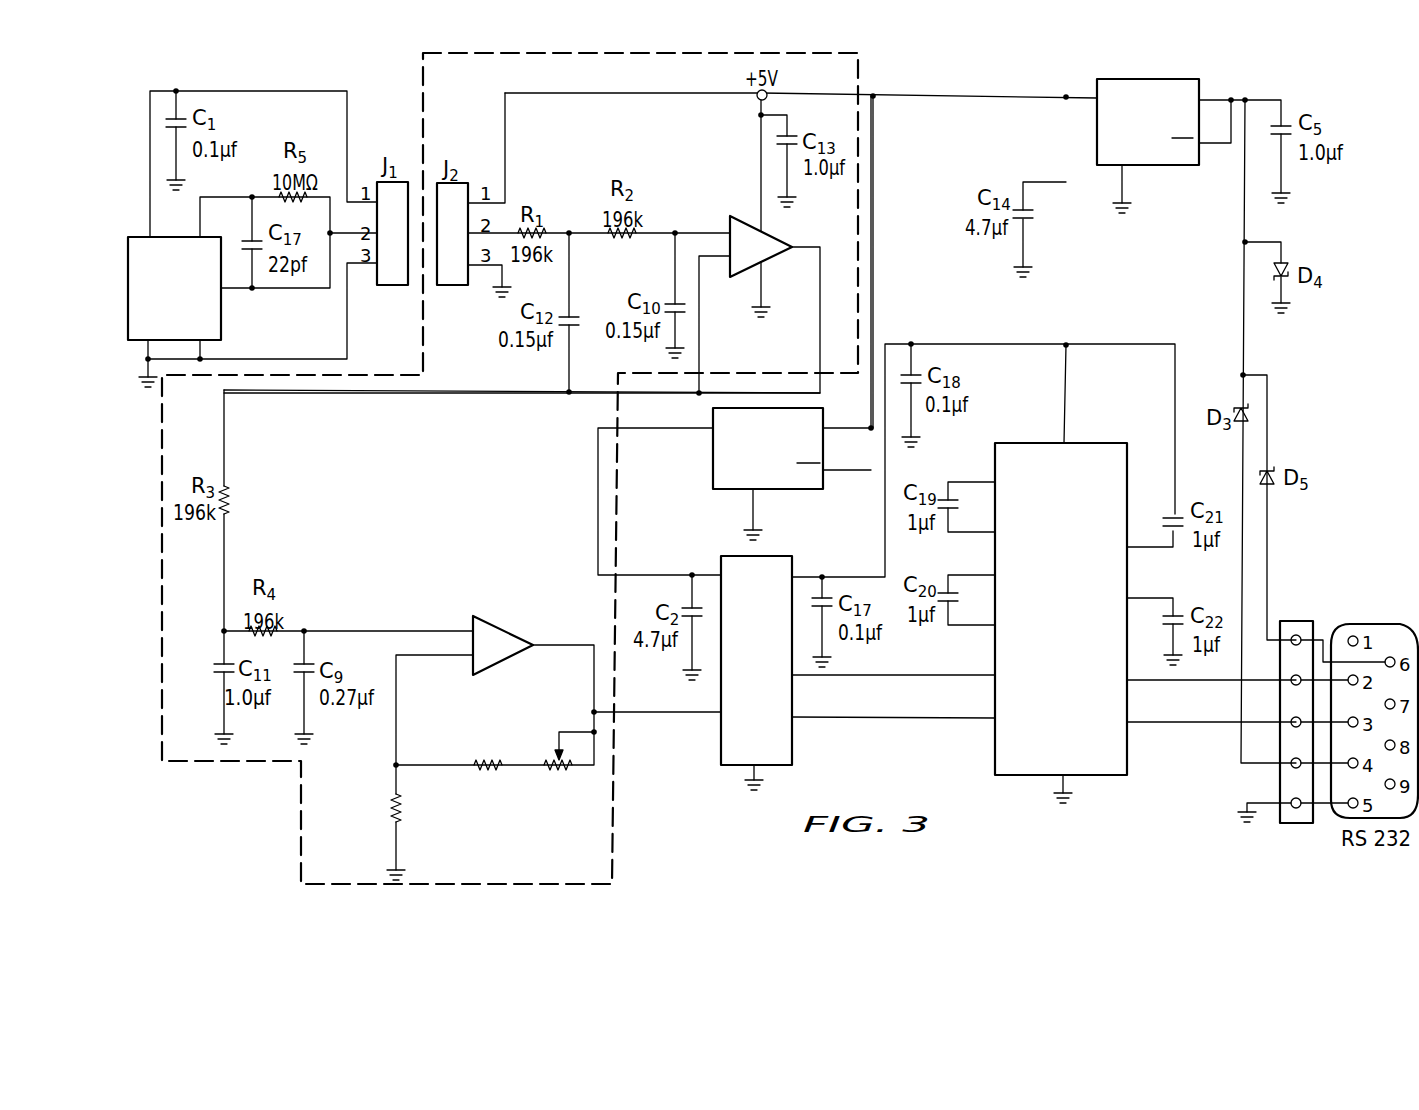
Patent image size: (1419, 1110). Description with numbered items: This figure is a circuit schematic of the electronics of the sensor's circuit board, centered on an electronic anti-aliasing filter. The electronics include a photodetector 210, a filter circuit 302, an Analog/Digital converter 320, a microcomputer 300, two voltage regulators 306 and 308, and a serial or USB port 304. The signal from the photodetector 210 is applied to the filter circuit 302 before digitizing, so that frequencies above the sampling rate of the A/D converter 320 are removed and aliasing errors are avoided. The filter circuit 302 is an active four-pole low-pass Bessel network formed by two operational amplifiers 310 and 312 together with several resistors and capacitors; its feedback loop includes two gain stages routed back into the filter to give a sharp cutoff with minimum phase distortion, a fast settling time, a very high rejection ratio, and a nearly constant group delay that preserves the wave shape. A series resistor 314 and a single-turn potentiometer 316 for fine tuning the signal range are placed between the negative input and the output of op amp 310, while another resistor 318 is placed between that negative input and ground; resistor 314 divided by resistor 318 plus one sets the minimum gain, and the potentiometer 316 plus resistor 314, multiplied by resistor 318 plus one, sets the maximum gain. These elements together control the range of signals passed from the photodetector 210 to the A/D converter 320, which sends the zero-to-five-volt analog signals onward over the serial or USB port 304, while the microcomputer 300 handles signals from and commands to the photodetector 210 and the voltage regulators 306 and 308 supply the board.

The photodetector 210 is at (222, 307).
The microcomputer 300 is at (1127, 752).
The filter circuit 302 is at (214, 801).
The RS 232 or USB port 304 is at (1293, 824).
The voltage regulator 306 is at (795, 490).
The voltage regulator 308 is at (1182, 166).
The operational amplifier 310 is at (522, 634).
The operational amplifier 312 is at (750, 217).
The series resistor 314 is at (488, 758).
The single-turn potentiometer 316 is at (550, 758).
The resistor 318 is at (392, 803).
The Analog/Digital converter 320 is at (792, 745).